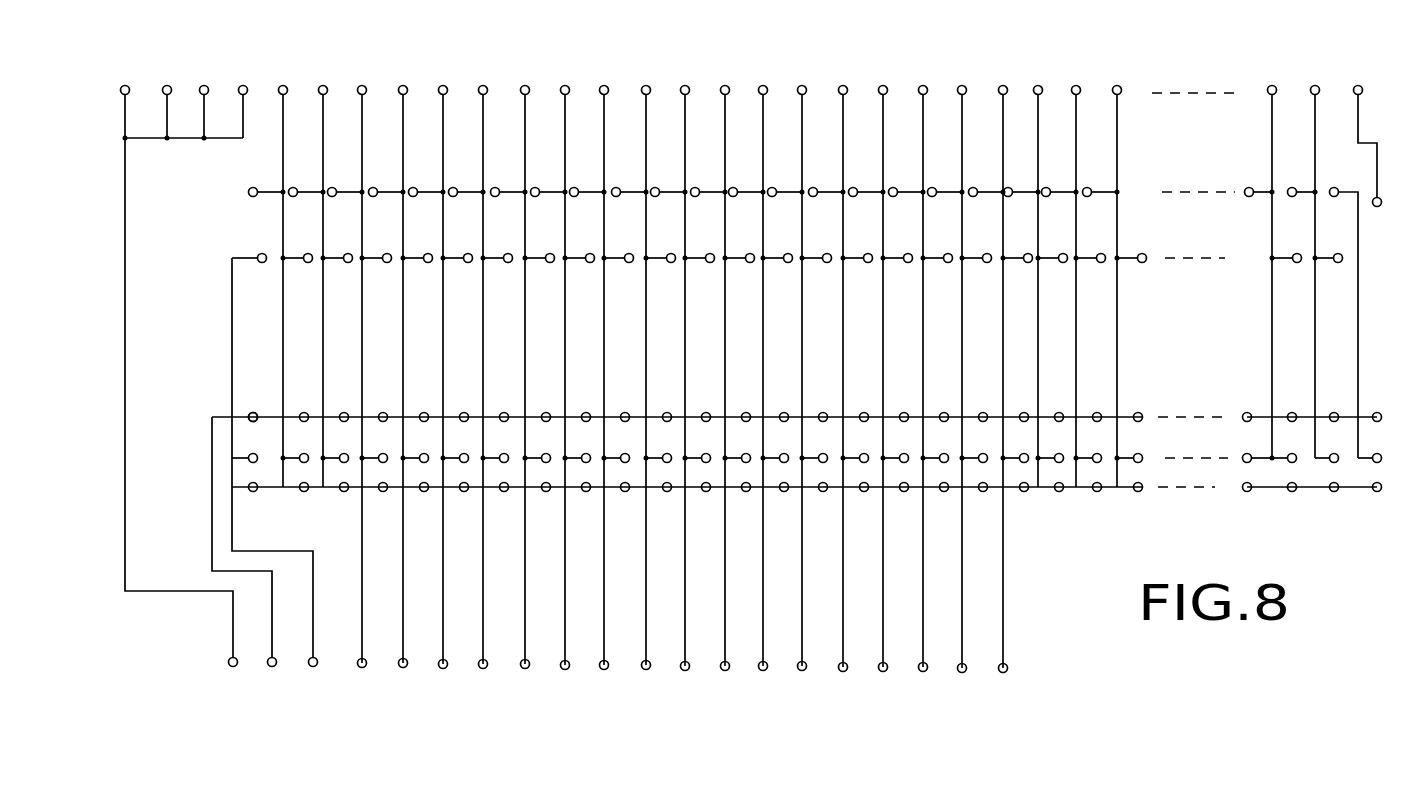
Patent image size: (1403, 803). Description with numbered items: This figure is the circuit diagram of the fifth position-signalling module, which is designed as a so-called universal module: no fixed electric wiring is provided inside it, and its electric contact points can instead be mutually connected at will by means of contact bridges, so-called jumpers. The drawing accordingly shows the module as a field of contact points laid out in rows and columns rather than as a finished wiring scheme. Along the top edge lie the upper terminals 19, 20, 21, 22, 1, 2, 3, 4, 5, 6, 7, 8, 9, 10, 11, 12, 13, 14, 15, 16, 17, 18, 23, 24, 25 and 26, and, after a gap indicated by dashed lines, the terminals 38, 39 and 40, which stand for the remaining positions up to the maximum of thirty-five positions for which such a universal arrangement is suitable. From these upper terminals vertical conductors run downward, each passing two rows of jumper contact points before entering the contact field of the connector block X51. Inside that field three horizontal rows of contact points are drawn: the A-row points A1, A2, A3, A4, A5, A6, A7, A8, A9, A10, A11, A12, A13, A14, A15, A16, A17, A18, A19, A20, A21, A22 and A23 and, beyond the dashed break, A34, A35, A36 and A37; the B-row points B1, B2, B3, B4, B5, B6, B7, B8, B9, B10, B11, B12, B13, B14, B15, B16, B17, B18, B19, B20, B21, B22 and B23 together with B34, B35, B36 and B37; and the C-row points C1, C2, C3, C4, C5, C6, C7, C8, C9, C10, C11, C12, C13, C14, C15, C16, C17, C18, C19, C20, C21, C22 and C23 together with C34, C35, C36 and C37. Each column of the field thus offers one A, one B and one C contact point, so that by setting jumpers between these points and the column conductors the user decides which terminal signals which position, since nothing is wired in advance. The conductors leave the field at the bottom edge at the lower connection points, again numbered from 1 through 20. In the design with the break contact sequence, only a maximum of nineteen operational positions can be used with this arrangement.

The connector terminal 1 is at (269, 375).
The connector terminal 2 is at (308, 375).
The connector terminal 3 is at (348, 375).
The connector terminal 4 is at (393, 376).
The connector terminal 5 is at (434, 376).
The connector terminal 6 is at (474, 376).
The connector terminal 7 is at (515, 376).
The connector terminal 8 is at (556, 376).
The connector terminal 9 is at (595, 377).
The connector terminal 10 is at (632, 377).
The connector terminal 11 is at (673, 377).
The connector terminal 12 is at (712, 377).
The connector terminal 13 is at (751, 377).
The connector terminal 14 is at (790, 377).
The connector terminal 15 is at (830, 377).
The connector terminal 16 is at (870, 378).
The connector terminal 17 is at (910, 378).
The connector terminal 18 is at (950, 378).
The connector terminal 19 is at (543, 378).
The connector terminal 20 is at (584, 378).
The connector terminal 21 is at (204, 95).
The connector terminal 22 is at (244, 95).
The connector terminal 23 is at (1001, 360).
The connector terminal 24 is at (1037, 269).
The connector terminal 25 is at (1077, 269).
The connector terminal 26 is at (1117, 269).
The connector terminal 38 is at (1273, 255).
The connector terminal 39 is at (1315, 255).
The connector terminal 40 is at (1358, 255).
The connector block X51 is at (220, 408).
The contact A1 is at (251, 408).
The contact A2 is at (302, 408).
The contact A3 is at (342, 408).
The contact A4 is at (381, 408).
The contact A5 is at (422, 408).
The contact A6 is at (462, 408).
The contact A7 is at (502, 408).
The contact A8 is at (544, 408).
The contact A9 is at (584, 408).
The contact A10 is at (623, 408).
The contact A11 is at (665, 408).
The contact A12 is at (704, 408).
The contact A13 is at (744, 408).
The contact A14 is at (782, 408).
The contact A15 is at (821, 408).
The contact A16 is at (862, 408).
The contact A17 is at (902, 408).
The contact A18 is at (942, 408).
The contact A19 is at (981, 408).
The contact A20 is at (1022, 408).
The contact A21 is at (1057, 408).
The contact A22 is at (1095, 408).
The contact A23 is at (1136, 408).
The contact A34 is at (1246, 408).
The contact A35 is at (1291, 408).
The contact A36 is at (1333, 408).
The contact A37 is at (1376, 408).
The contact B1 is at (248, 448).
The contact B2 is at (298, 448).
The contact B3 is at (338, 448).
The contact B4 is at (377, 448).
The contact B5 is at (418, 448).
The contact B6 is at (458, 448).
The contact B7 is at (498, 448).
The contact B8 is at (540, 448).
The contact B9 is at (580, 448).
The contact B10 is at (621, 448).
The contact B11 is at (663, 448).
The contact B12 is at (702, 448).
The contact B13 is at (742, 448).
The contact B14 is at (780, 448).
The contact B15 is at (819, 448).
The contact B16 is at (860, 448).
The contact B17 is at (900, 448).
The contact B18 is at (940, 448).
The contact B19 is at (979, 448).
The contact B20 is at (1020, 448).
The contact B21 is at (1055, 448).
The contact B22 is at (1093, 448).
The contact B23 is at (1134, 448).
The contact B34 is at (1252, 448).
The contact B35 is at (1290, 448).
The contact B36 is at (1332, 448).
The contact B37 is at (1375, 448).
The contact C1 is at (251, 478).
The contact C2 is at (302, 478).
The contact C3 is at (342, 478).
The contact C4 is at (381, 478).
The contact C5 is at (422, 478).
The contact C6 is at (462, 478).
The contact C7 is at (502, 478).
The contact C8 is at (544, 478).
The contact C9 is at (584, 478).
The contact C10 is at (623, 478).
The contact C11 is at (665, 478).
The contact C12 is at (704, 478).
The contact C13 is at (744, 478).
The contact C14 is at (782, 478).
The contact C15 is at (821, 478).
The contact C16 is at (862, 478).
The contact C17 is at (902, 478).
The contact C18 is at (942, 478).
The contact C19 is at (981, 478).
The contact C20 is at (1022, 478).
The contact C21 is at (1057, 478).
The contact C22 is at (1095, 478).
The contact C23 is at (1136, 478).
The contact C34 is at (1248, 478).
The contact C35 is at (1293, 478).
The contact C36 is at (1335, 478).
The contact C37 is at (1378, 478).